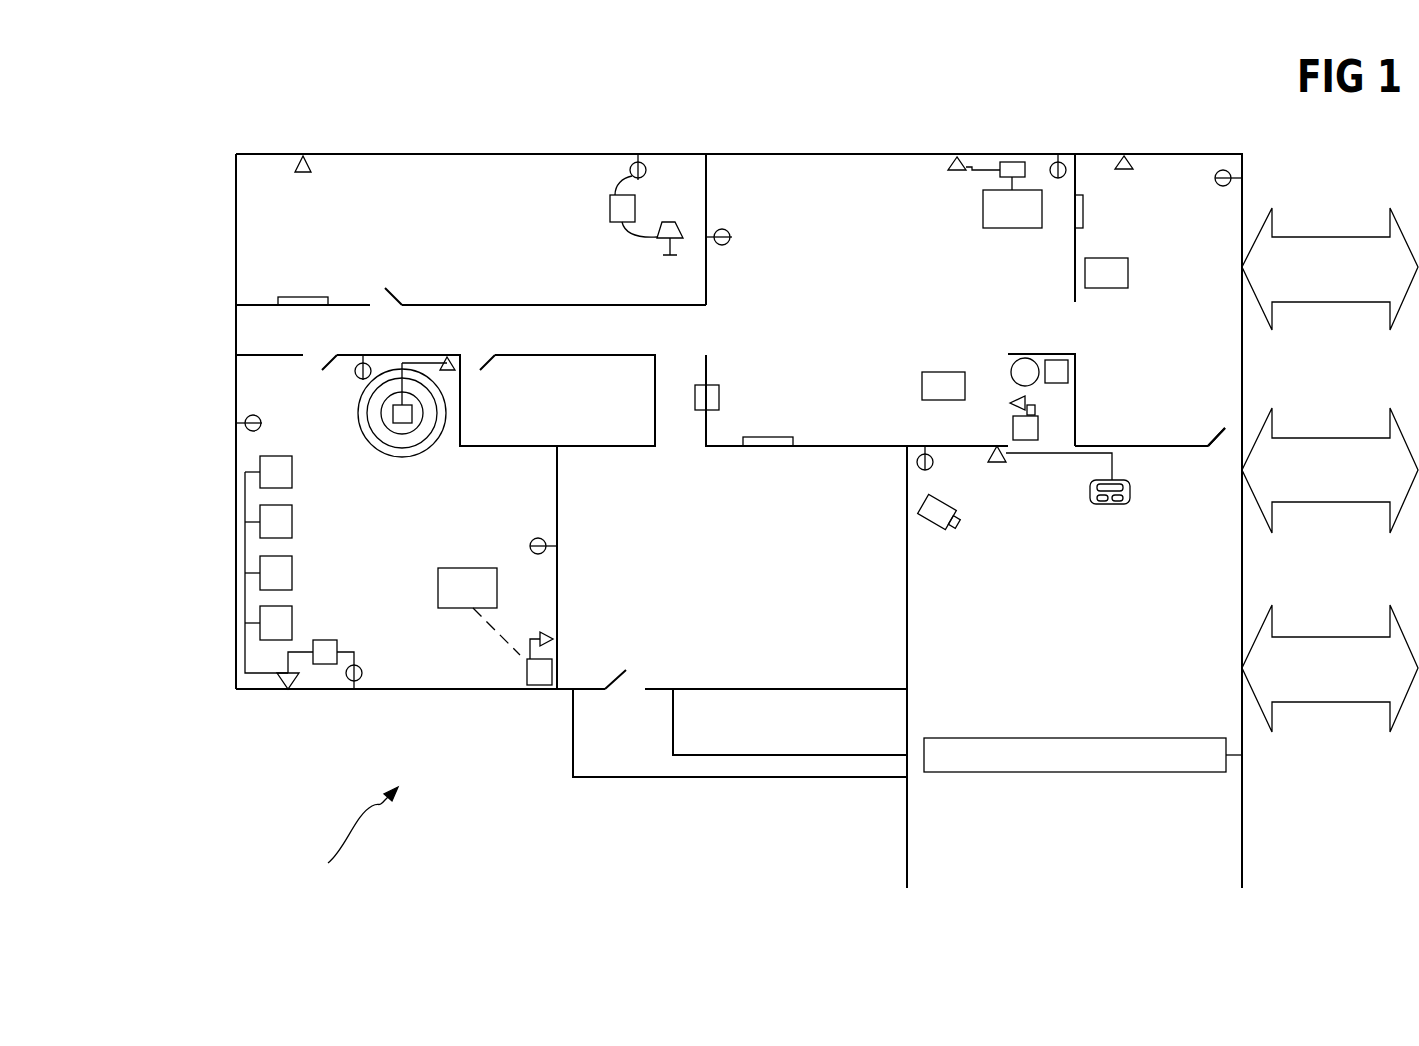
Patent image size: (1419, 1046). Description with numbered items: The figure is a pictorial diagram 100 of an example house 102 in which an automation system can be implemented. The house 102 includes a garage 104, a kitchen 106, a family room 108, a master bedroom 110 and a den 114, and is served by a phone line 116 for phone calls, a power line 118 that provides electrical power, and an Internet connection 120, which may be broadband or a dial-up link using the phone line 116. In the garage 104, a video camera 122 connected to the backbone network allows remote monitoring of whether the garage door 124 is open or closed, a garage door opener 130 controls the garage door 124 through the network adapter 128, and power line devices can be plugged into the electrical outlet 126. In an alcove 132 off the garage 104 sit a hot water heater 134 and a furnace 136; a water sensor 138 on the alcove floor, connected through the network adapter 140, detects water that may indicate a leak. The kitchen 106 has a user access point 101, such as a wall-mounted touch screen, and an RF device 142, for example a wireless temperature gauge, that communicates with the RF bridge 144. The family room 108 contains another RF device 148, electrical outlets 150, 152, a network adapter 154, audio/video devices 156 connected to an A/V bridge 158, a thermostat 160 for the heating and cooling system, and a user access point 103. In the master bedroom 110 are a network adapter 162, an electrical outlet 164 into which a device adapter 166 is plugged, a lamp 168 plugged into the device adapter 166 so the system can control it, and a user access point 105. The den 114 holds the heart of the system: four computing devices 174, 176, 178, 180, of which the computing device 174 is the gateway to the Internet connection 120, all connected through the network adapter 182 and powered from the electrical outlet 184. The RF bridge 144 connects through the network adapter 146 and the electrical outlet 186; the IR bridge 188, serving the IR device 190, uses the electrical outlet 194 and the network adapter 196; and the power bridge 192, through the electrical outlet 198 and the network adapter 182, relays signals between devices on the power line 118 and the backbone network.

The pictorial diagram 100 is at (342, 828).
The user access point 101 is at (1075, 226).
The house 102 is at (815, 154).
The user access point 103 is at (785, 401).
The garage 104 is at (1093, 600).
The user access point 105 is at (300, 297).
The kitchen 106 is at (1178, 238).
The family room 108 is at (901, 327).
The master bedroom 110 is at (490, 265).
The den 114 is at (405, 538).
The phone line 116 is at (1360, 704).
The power line 118 is at (1360, 504).
The Internet connection 120 is at (1360, 304).
The video camera 122 is at (962, 528).
The garage door 124 is at (1088, 738).
The electrical outlet 126 is at (933, 468).
The network adapter 128 is at (1003, 462).
The garage door opener 130 is at (1130, 492).
The alcove 132 is at (1058, 418).
The hot water heater 134 is at (1025, 358).
The furnace 136 is at (1058, 360).
The water sensor 138 is at (1013, 428).
The network adapter 140 is at (1010, 400).
The RF device 142 is at (1128, 276).
The RF bridge 144 is at (393, 415).
The network adapter 146 is at (447, 357).
The RF device 148 is at (922, 386).
The electrical outlet 150 is at (732, 238).
The electrical outlet 152 is at (1058, 162).
The network adapter 154 is at (950, 170).
The audio/video devices 156 is at (983, 210).
The A/V bridge 158 is at (1012, 162).
The thermostat 160 is at (719, 392).
The network adapter 162 is at (303, 173).
The electrical outlet 164 is at (638, 161).
The device adapter 166 is at (617, 222).
The lamp 168 is at (670, 258).
The computing device 174 is at (292, 468).
The computing device 176 is at (292, 524).
The computing device 178 is at (292, 578).
The computing device 180 is at (292, 618).
The network adapter 182 is at (288, 690).
The electrical outlet 184 is at (245, 424).
The electrical outlet 186 is at (355, 371).
The IR bridge 188 is at (527, 670).
The IR device 190 is at (438, 584).
The power bridge 192 is at (337, 642).
The electrical outlet 194 is at (530, 546).
The network adapter 196 is at (553, 640).
The electrical outlet 198 is at (354, 689).